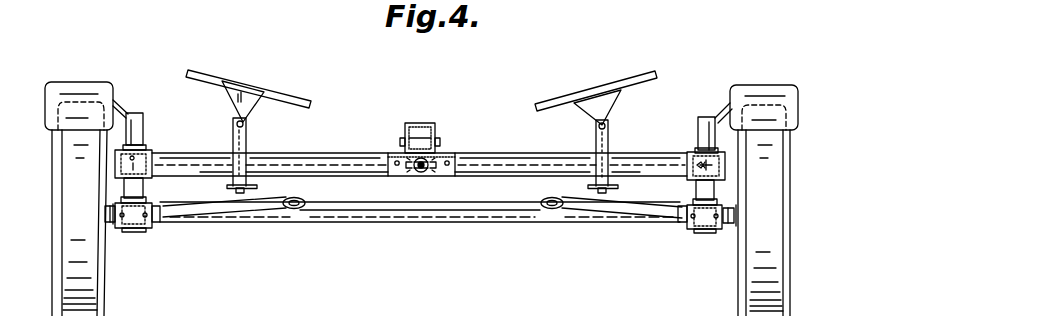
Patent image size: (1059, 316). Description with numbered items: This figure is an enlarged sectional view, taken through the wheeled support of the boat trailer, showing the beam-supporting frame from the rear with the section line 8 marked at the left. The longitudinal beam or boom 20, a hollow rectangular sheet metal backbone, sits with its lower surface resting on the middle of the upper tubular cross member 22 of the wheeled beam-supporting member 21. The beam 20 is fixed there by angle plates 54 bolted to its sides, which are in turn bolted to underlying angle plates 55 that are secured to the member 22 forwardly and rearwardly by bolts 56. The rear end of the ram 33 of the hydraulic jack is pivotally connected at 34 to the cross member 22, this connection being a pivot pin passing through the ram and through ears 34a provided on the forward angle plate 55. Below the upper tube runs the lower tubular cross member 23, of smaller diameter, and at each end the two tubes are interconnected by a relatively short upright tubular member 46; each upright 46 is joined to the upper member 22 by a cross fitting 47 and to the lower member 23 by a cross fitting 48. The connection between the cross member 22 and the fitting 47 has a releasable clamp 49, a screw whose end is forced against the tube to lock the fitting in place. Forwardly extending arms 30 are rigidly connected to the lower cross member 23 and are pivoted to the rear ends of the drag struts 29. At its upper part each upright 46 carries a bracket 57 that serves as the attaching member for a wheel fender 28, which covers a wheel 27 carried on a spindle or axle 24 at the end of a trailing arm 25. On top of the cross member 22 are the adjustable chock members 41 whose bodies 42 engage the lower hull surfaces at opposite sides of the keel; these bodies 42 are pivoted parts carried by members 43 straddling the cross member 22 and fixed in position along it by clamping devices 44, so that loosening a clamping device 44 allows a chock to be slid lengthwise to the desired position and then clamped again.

The section line 8- 8 is at (204, 62).
The longitudinal beam or boom 20 is at (421, 123).
The wheeled beam-supporting member 21 is at (146, 230).
The upper tubular cross member 22 is at (524, 163).
The lower tubular cross member 23 is at (500, 222).
The spindles or axles 24 is at (106, 214).
The trailing arms 25 is at (108, 207).
The wheels 27 is at (90, 294).
The wheel fenders 28 is at (80, 94).
The drag struts 29 is at (290, 209).
The forwardly extending arms 30 is at (152, 210).
The ram 33 is at (421, 172).
The pivotal connection 34 is at (412, 165).
The ears 34a is at (430, 168).
The adjustable chock members 41 is at (278, 90).
The chock bodies 42 is at (237, 84).
The straddling members 43 is at (247, 140).
The clamping devices 44 is at (246, 193).
The upright tubular members 46 is at (699, 136).
The cross fitting 47 is at (726, 166).
The cross fitting 48 is at (705, 230).
The releasable clamp 49 is at (694, 166).
The angle plates 54 is at (402, 152).
The underlying angle plates 55 is at (389, 170).
The bolts 56 is at (393, 162).
The bracket 57 is at (722, 113).